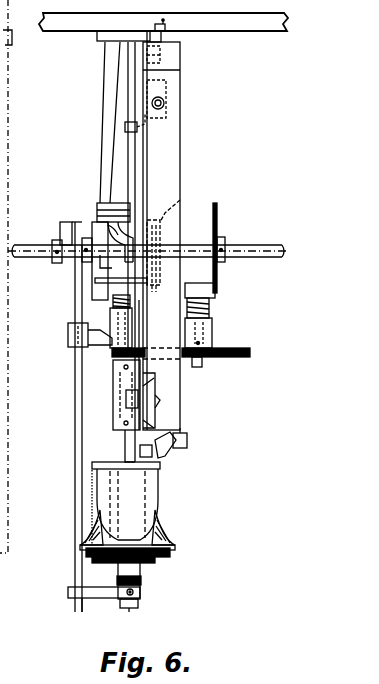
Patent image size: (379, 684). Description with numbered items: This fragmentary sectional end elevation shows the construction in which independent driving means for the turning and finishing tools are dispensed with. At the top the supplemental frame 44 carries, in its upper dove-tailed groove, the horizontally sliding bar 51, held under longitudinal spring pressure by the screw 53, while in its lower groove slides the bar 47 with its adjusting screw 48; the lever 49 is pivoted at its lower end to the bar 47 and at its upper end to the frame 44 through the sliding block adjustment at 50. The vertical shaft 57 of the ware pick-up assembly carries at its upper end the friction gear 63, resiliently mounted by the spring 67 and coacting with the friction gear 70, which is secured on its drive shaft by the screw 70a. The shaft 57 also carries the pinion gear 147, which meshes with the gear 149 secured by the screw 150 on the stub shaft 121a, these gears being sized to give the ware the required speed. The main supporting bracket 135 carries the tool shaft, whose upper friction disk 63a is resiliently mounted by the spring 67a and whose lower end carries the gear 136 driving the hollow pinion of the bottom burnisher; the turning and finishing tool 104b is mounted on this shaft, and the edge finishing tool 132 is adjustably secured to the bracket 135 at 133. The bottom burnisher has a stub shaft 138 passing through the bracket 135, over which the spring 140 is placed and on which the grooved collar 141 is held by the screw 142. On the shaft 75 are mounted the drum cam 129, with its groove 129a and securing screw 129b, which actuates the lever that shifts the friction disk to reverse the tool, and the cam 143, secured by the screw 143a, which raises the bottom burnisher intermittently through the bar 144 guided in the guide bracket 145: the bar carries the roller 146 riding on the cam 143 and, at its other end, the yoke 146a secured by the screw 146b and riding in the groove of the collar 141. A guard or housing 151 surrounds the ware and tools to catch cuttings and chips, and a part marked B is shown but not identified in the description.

The supplemental frame 44 is at (166, 179).
The sliding block adjustment pivot 50 is at (160, 61).
The screw 53 is at (165, 105).
The bar 51 is at (147, 124).
The lever 49 is at (128, 152).
The supporting bracket 135 is at (120, 98).
The drum cam 129 is at (105, 245).
The groove of drum cam 129a is at (104, 220).
The screw 129b is at (100, 250).
The shaft 75 is at (258, 245).
The roller 146 is at (60, 231).
The screw 143a is at (56, 263).
The cam 143 is at (82, 262).
The bar 144 is at (75, 440).
The guide bracket 145 is at (68, 335).
The friction disk 63a is at (147, 285).
The spring 67a is at (113, 304).
The adjusting screw 48 is at (112, 352).
The pinion gear 147 is at (113, 370).
The bar 47 is at (152, 395).
The shaft 57 is at (125, 440).
The friction gear 70 is at (217, 216).
The screw 70a is at (187, 201).
The friction gear 63 is at (215, 297).
The spring 67 is at (209, 306).
The screw 150 is at (212, 342).
The gear 149 is at (248, 348).
The stub shaft 121a is at (198, 367).
The adjustable securing means 133 is at (187, 441).
The edge finishing tool 132 is at (172, 452).
The bowl B is at (160, 485).
The guard or housing 151 is at (90, 511).
The turning and finishing tool 104b is at (165, 538).
The gear 136 is at (170, 553).
The spring 140 is at (141, 581).
The grooved collar 141 is at (140, 595).
The screw 142 is at (138, 605).
The stub shaft 138 is at (130, 608).
The screw 146b is at (68, 593).
The yoke or fork 146a is at (95, 600).